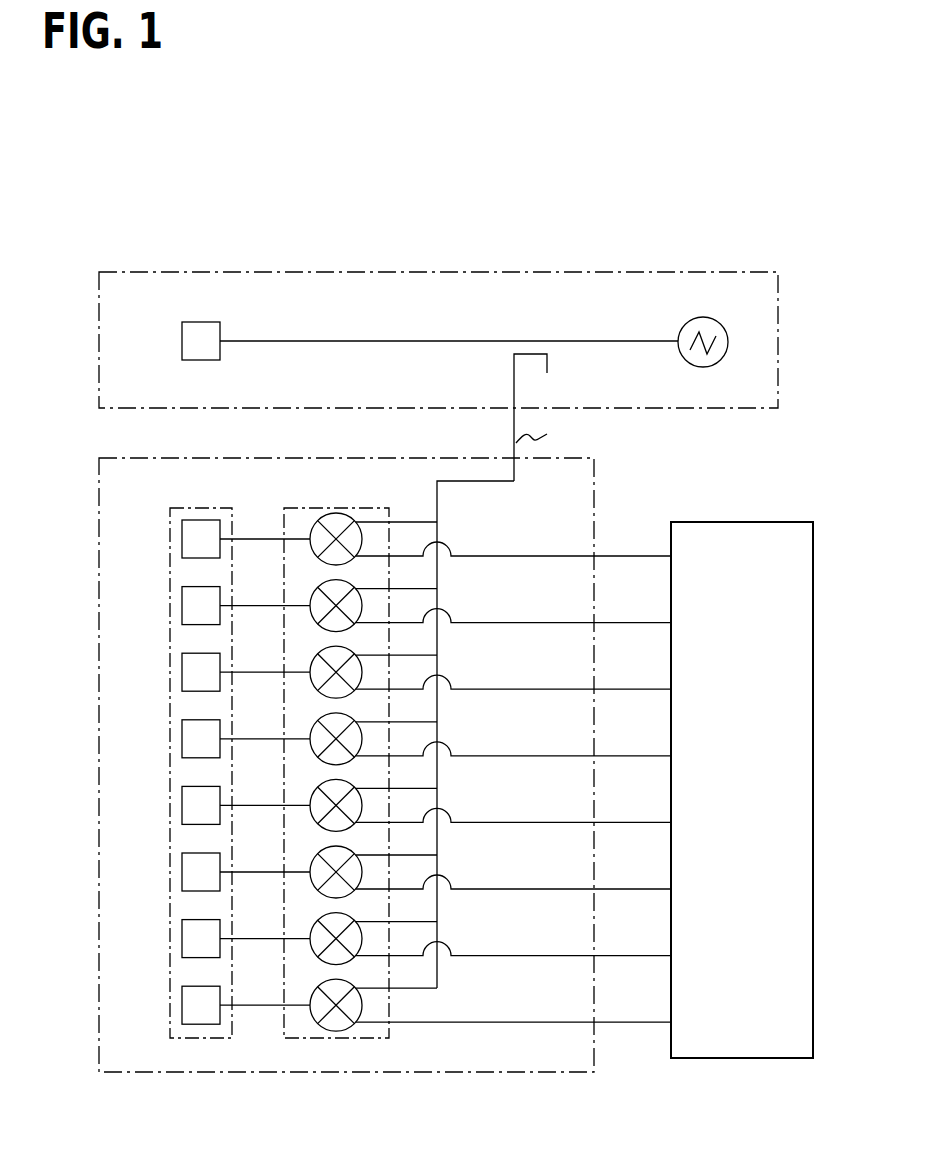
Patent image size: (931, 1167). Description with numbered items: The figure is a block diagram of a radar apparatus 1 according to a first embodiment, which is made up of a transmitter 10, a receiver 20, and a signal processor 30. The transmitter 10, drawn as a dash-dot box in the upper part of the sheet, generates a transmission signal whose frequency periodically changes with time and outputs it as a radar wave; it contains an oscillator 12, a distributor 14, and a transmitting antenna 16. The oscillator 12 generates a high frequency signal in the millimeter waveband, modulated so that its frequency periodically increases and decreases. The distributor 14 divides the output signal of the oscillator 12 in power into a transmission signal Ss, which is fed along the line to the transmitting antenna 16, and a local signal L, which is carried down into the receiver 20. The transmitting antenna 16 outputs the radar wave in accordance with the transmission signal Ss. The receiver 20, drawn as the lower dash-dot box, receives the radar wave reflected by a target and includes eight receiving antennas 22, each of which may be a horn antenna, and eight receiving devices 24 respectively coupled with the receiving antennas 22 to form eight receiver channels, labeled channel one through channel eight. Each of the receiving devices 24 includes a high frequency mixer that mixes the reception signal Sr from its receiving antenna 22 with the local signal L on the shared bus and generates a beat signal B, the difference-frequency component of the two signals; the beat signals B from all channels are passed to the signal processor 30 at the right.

The radar apparatus 1 is at (308, 192).
The transmitter 10 is at (578, 272).
The oscillator 12 is at (686, 322).
The distributor 14 is at (505, 353).
The transmitting antenna 16 is at (182, 322).
The receiver 20 is at (596, 479).
The receiving antennas 22 is at (176, 506).
The receiving devices 24 is at (297, 507).
The signal processor 30 is at (762, 522).